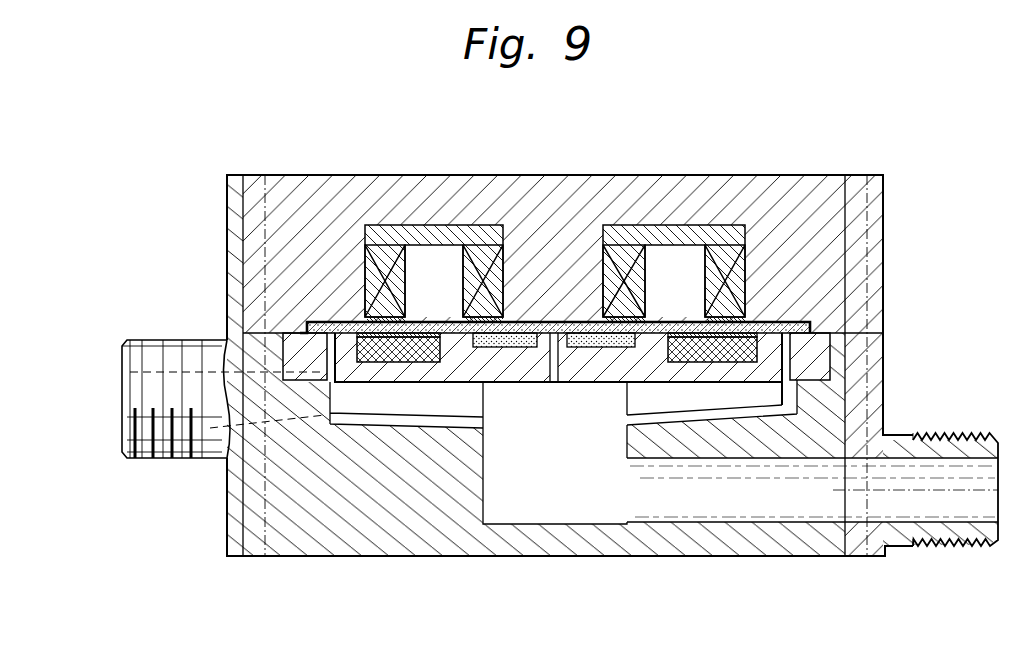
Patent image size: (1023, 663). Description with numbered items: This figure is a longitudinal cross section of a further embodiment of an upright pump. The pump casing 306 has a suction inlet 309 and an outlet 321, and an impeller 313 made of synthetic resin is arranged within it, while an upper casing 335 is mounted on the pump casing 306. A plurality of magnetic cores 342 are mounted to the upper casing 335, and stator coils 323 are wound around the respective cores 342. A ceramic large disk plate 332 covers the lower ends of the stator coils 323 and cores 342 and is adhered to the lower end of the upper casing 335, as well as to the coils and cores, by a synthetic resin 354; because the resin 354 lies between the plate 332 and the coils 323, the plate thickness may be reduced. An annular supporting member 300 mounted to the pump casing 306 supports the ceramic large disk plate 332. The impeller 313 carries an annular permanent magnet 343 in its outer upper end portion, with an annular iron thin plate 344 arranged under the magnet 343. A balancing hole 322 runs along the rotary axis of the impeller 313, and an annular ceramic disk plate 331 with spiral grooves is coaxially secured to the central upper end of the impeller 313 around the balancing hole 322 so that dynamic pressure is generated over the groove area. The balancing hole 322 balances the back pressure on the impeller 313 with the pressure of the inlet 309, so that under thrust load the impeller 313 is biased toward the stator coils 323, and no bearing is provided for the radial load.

The annular supporting member 300 is at (297, 345).
The pump casing 306 is at (418, 547).
The suction inlet 309 is at (942, 518).
The impeller 313 is at (772, 353).
The outlet 321 is at (162, 374).
The balancing hole 322 is at (553, 365).
The stator coils 323 is at (481, 250).
The annular ceramic disk plate 331 is at (517, 345).
The ceramic large disk plate 332 is at (323, 318).
The upper casing 335 is at (548, 178).
The magnetic cores 342 is at (673, 233).
The annular permanent magnet 343 is at (350, 357).
The annular iron thin plate 344 is at (712, 360).
The synthetic resin 354 is at (412, 318).